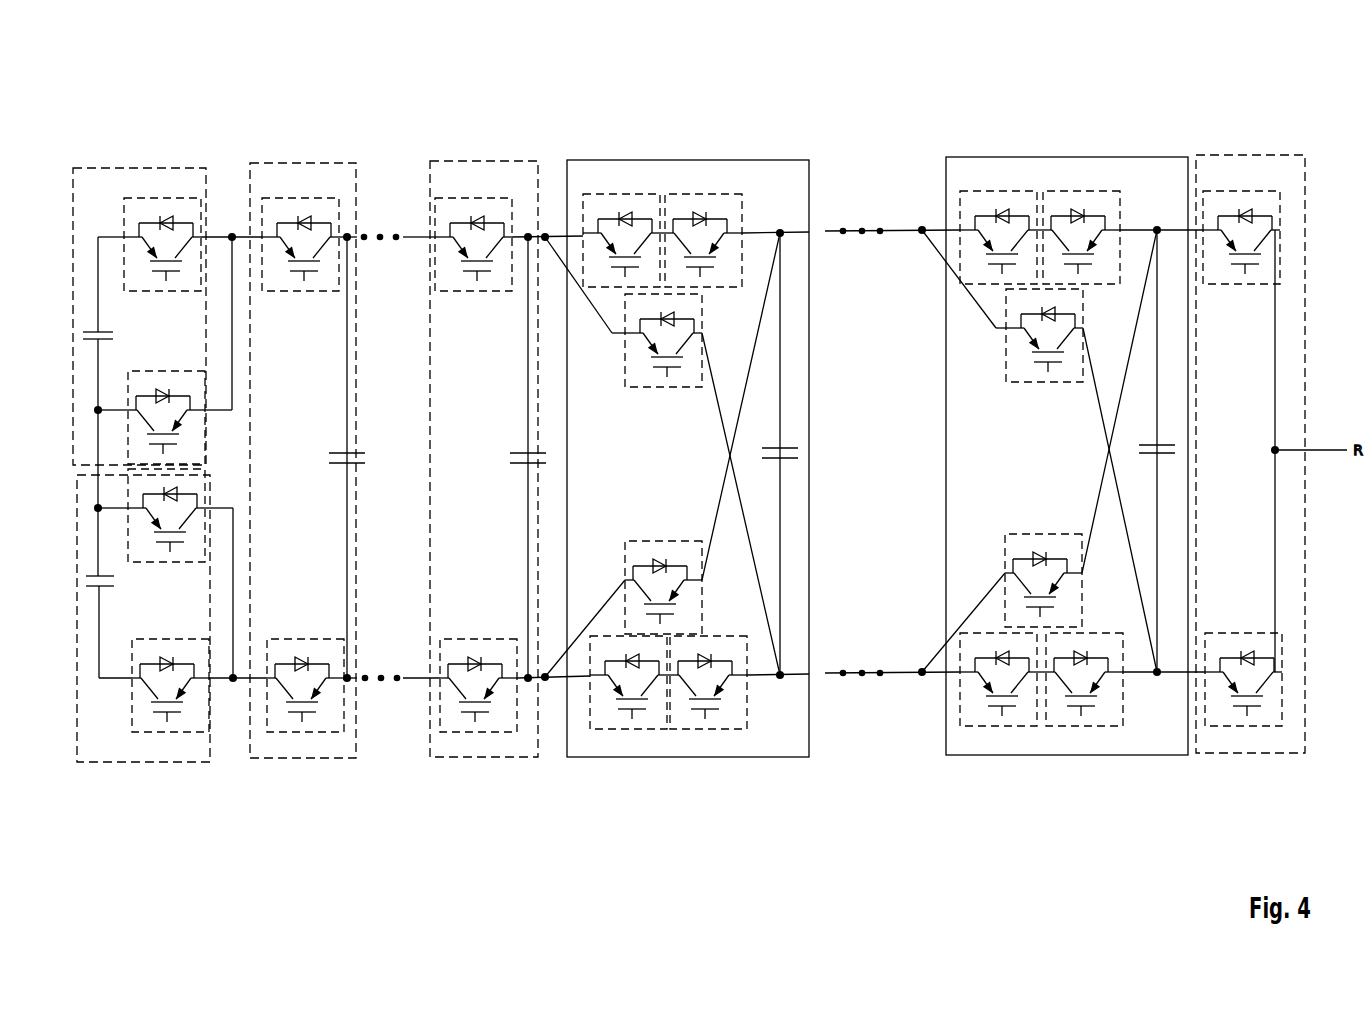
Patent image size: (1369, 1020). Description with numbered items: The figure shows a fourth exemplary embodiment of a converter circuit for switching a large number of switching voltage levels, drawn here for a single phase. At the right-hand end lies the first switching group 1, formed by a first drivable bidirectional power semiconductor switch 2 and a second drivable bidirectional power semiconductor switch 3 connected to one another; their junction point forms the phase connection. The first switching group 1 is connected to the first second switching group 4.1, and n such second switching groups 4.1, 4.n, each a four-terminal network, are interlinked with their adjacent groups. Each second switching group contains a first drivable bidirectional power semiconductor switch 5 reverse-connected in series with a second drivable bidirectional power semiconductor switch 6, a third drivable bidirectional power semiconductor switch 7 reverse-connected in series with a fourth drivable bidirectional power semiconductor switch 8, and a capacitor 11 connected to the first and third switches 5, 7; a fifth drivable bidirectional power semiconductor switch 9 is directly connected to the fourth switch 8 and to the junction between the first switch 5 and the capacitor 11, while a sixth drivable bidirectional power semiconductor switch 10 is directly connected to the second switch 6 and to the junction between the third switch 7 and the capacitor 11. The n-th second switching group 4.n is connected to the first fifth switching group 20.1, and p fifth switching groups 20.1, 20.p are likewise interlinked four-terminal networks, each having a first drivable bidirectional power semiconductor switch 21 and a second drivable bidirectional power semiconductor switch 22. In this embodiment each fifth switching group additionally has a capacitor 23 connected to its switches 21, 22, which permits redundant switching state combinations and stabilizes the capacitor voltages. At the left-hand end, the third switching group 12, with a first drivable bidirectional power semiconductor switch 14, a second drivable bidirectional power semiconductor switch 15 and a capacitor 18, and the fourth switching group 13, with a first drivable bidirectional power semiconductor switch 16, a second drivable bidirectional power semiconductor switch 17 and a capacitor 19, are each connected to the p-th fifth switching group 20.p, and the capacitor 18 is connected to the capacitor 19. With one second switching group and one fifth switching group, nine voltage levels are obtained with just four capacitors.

The first switching group 1 is at (1227, 155).
The first drivable bidirectional power semiconductor switch 2 is at (1253, 191).
The second drivable bidirectional power semiconductor switch 3 is at (1237, 726).
The first second switching group 4.1 is at (1040, 157).
The n-th second switching group 4.n is at (677, 160).
The first drivable bidirectional power semiconductor switch 5 is at (720, 194).
The second drivable bidirectional power semiconductor switch 6 is at (598, 194).
The third drivable bidirectional power semiconductor switch 7 is at (722, 729).
The fourth drivable bidirectional power semiconductor switch 8 is at (608, 729).
The fifth drivable bidirectional power semiconductor switch 9 is at (648, 634).
The sixth drivable bidirectional power semiconductor switch 10 is at (703, 300).
The capacitor 11 is at (791, 445).
The third switching group 12 is at (98, 168).
The fourth switching group 13 is at (85, 762).
The first drivable bidirectional power semiconductor switch 14 is at (172, 198).
The second drivable bidirectional power semiconductor switch 15 is at (190, 371).
The first drivable bidirectional power semiconductor switch 16 is at (178, 562).
The second drivable bidirectional power semiconductor switch 17 is at (165, 732).
The capacitor 18 is at (107, 326).
The capacitor 19 is at (113, 586).
The p-th fifth switching group 20.p is at (297, 163).
The first fifth switching group 20.1 is at (440, 161).
The first drivable bidirectional power semiconductor switch 21 is at (325, 198).
The second drivable bidirectional power semiconductor switch 22 is at (330, 732).
The capacitor 23 is at (357, 448).